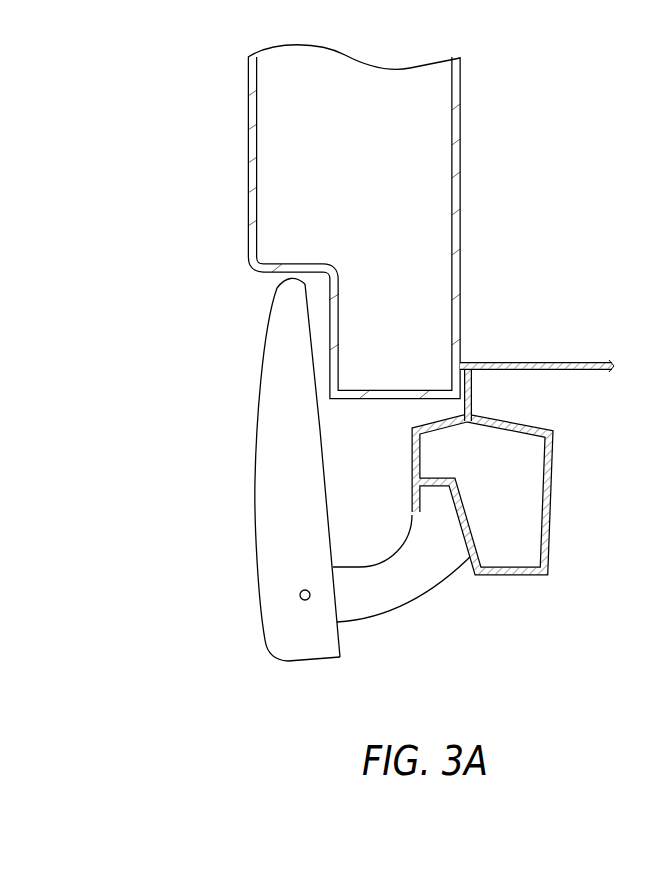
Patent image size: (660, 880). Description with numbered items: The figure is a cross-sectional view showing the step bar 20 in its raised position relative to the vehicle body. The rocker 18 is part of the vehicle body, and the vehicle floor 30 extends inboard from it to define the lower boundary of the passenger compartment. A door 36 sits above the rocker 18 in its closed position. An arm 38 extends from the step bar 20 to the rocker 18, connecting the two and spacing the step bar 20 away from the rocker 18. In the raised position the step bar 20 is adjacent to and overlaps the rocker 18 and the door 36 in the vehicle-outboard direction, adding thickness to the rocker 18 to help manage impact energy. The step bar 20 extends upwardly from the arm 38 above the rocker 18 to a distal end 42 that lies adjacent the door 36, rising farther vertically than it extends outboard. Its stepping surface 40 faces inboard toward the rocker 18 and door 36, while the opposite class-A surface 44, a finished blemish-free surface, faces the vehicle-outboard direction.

The rocker 18 is at (555, 449).
The step bar 20 is at (265, 469).
The vehicle floor 30 is at (540, 357).
The door 36 is at (452, 195).
The arm 38 is at (410, 580).
The stepping surface 40 is at (317, 492).
The distal end 42 is at (292, 268).
The class-A surface 44 is at (250, 428).